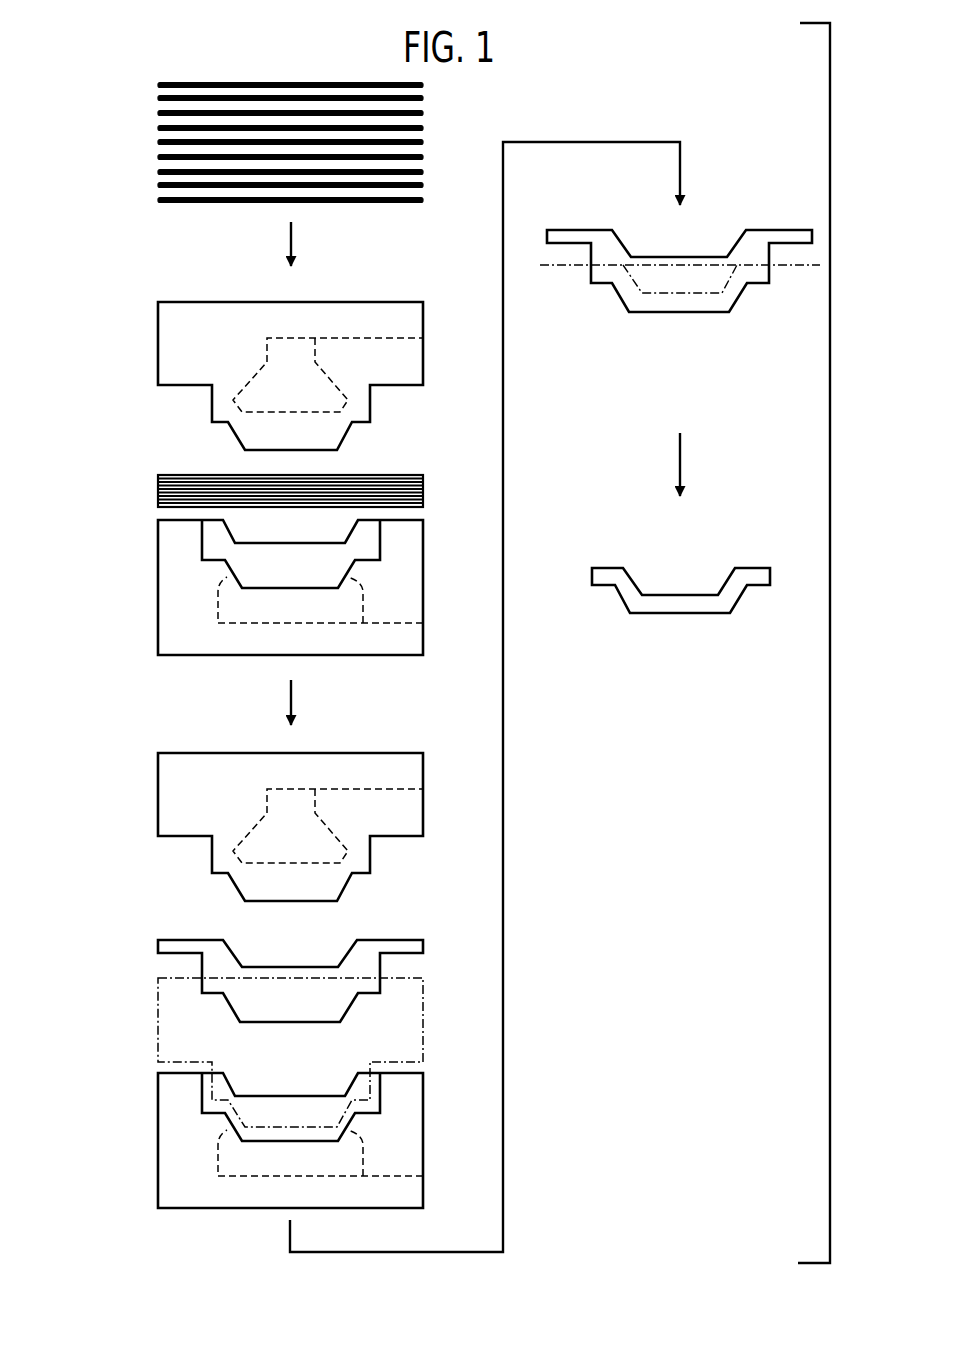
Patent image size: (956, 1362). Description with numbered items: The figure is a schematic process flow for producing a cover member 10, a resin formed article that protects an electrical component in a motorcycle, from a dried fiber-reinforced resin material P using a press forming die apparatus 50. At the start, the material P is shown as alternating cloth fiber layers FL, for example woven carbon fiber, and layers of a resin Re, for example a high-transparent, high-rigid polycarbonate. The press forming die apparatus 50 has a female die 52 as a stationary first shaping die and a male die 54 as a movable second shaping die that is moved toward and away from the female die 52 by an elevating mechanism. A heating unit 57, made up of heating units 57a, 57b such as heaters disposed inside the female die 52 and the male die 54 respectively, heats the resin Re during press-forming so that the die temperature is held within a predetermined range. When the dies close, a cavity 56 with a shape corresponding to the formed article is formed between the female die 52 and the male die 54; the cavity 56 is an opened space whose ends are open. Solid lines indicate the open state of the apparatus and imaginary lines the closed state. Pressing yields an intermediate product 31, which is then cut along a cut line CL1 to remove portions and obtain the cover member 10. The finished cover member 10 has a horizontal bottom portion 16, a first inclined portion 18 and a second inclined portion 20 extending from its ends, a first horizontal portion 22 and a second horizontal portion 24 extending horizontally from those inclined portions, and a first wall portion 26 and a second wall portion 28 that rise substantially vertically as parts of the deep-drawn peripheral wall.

The fiber-reinforced resin material P is at (95, 63).
The resin Re is at (158, 85).
The fiber layer FL is at (158, 98).
The press forming die apparatus 50 is at (156, 292).
The male die 54 is at (175, 369).
The female die 52 is at (175, 573).
The heating unit 57 is at (426, 338).
The heating unit 57a is at (218, 602).
The heating unit 57b is at (267, 350).
The cavity 56 is at (257, 1132).
The intermediate product 31 is at (156, 928).
The cover member 10 is at (212, 987).
The cut line CL1 is at (798, 267).
The bottom portion 16 is at (672, 608).
The first inclined portion 18 is at (627, 600).
The second inclined portion 20 is at (735, 600).
The first horizontal portion 22 is at (605, 582).
The second horizontal portion 24 is at (755, 582).
The first wall portion 26 is at (592, 577).
The second wall portion 28 is at (772, 577).